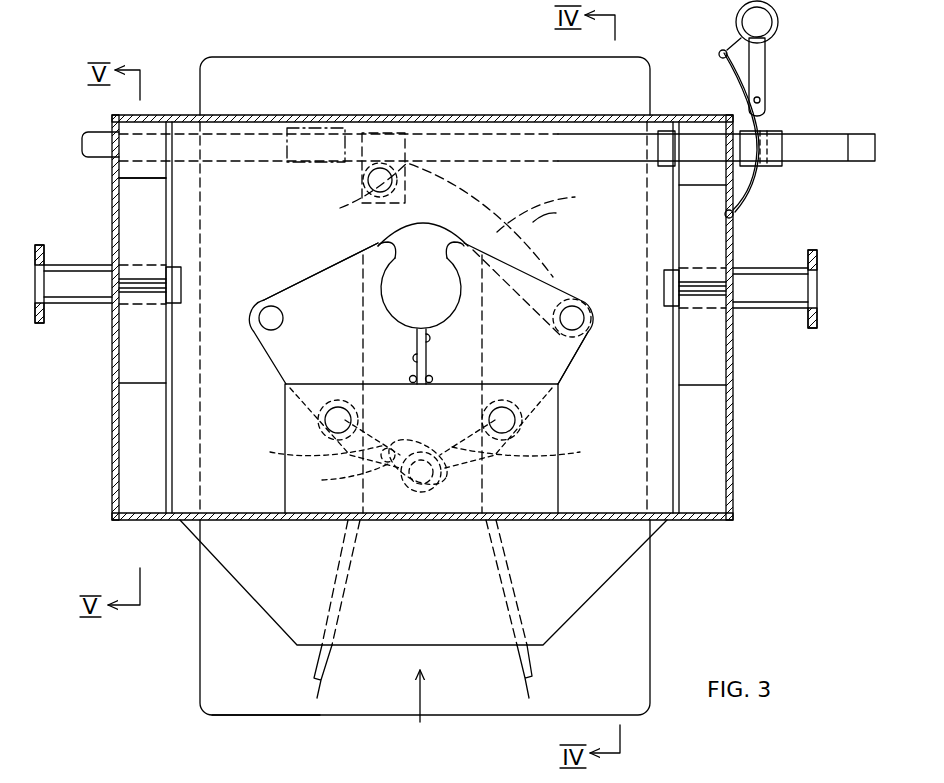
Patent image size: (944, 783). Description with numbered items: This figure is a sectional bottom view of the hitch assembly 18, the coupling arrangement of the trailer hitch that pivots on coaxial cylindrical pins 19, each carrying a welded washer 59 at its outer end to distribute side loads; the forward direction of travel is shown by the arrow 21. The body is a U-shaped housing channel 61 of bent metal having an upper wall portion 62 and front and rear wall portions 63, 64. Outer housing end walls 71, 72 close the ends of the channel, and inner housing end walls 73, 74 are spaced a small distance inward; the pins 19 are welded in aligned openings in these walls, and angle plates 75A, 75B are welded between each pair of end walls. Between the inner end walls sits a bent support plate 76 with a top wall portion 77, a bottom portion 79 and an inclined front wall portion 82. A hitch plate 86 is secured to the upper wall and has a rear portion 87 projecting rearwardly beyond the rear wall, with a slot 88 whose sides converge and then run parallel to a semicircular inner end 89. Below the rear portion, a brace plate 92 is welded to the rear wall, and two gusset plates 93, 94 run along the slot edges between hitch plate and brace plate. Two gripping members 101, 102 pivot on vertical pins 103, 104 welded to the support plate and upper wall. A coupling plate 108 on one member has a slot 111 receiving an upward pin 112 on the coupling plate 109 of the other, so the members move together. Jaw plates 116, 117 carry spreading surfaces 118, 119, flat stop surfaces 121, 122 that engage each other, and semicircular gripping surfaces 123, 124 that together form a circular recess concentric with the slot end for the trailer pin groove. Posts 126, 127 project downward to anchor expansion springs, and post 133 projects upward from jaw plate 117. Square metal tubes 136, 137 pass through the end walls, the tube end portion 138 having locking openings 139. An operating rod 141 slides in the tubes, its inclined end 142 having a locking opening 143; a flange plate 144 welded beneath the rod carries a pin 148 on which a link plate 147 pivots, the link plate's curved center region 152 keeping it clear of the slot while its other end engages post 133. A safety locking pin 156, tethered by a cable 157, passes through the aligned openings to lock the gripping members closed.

The hitch assembly 18 is at (392, 48).
The cylindrical pins 19 is at (78, 275).
The forward direction arrow 21 is at (423, 692).
The washer 59 is at (40, 318).
The housing channel 61 is at (128, 520).
The upper wall portion 62 is at (130, 473).
The front wall portion 63 is at (490, 120).
The rear wall portion 64 is at (152, 518).
The outer housing end wall 71 is at (112, 410).
The outer housing end wall 72 is at (735, 456).
The inner housing end wall 73 is at (166, 445).
The inner housing end wall 74 is at (675, 490).
The angle plate 75A is at (130, 345).
The angle plate 75B is at (708, 348).
The support plate 76 is at (283, 494).
The top wall portion 77 is at (556, 213).
The bottom portion 79 is at (558, 492).
The front wall portion 82 is at (555, 178).
The hitch plate 86 is at (233, 55).
The rear portion 87 is at (628, 624).
The slot 88 is at (318, 690).
The inner end of slot 89 is at (393, 232).
The brace plate 92 is at (623, 538).
The gusset plate 93 is at (325, 660).
The gusset plate 94 is at (525, 650).
The gripping member 101 is at (268, 370).
The gripping member 102 is at (572, 370).
The vertical pin 103 is at (335, 420).
The vertical pin 104 is at (505, 420).
The coupling plate 108 is at (285, 452).
The coupling plate 109 is at (565, 452).
The slot 111 is at (340, 478).
The pin 112 is at (470, 480).
The jaw plate 116 is at (272, 338).
The jaw plate 117 is at (576, 350).
The spreading surface 118 is at (415, 378).
The spreading surface 119 is at (428, 378).
The stop surface 121 is at (418, 334).
The stop surface 122 is at (426, 344).
The gripping surface 123 is at (386, 290).
The gripping surface 124 is at (458, 270).
The post 126 is at (268, 308).
The post 127 is at (588, 328).
The post 133 is at (586, 300).
The metal tube 136 is at (187, 142).
The metal tube 137 is at (690, 147).
The end portion 138 is at (782, 138).
The locking openings 139 is at (770, 128).
The operating rod 141 is at (627, 145).
The rod end 142 is at (830, 152).
The locking opening 143 is at (760, 168).
The flange plate 144 is at (340, 208).
The link plate 147 is at (562, 298).
The pin 148 is at (367, 182).
The center region 152 is at (585, 200).
The safety locking pin 156 is at (767, 62).
The flexible stranded metal cable 157 is at (722, 52).